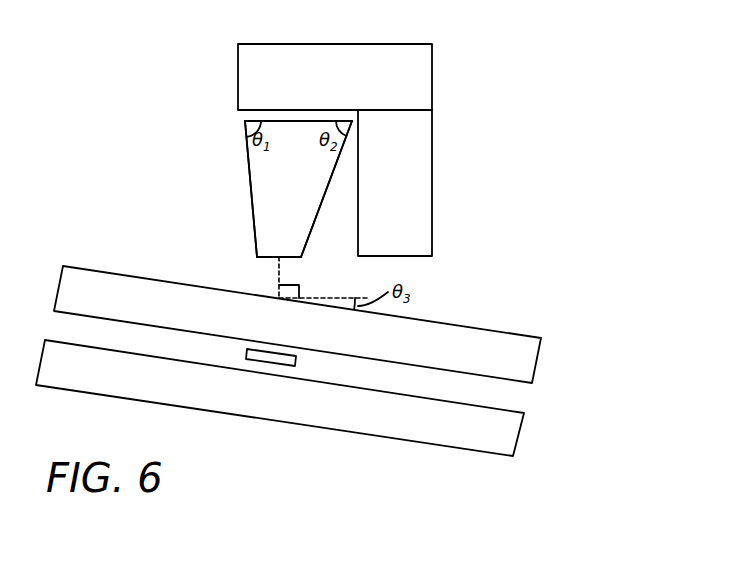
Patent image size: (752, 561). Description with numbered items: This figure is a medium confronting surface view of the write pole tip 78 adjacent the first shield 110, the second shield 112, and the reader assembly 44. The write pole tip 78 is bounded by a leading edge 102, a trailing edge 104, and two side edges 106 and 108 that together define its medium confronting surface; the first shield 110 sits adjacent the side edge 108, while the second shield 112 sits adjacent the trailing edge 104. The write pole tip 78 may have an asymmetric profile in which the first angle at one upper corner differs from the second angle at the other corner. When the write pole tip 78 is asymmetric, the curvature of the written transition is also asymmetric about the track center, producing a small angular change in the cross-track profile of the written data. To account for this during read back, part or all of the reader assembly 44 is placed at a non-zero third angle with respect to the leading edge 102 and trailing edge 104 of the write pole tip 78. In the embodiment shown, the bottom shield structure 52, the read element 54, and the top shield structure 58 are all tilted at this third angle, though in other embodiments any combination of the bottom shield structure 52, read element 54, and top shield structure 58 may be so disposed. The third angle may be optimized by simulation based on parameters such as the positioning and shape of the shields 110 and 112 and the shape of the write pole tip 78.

The reader assembly 44 is at (336, 376).
The bottom shield structure 52 is at (407, 441).
The read element 54 is at (296, 361).
The top shield structure 58 is at (463, 324).
The write pole tip 78 is at (298, 189).
The leading edge 102 is at (285, 258).
The trailing edge 104 is at (249, 120).
The side edge 106 is at (249, 180).
The side edge 108 is at (324, 198).
The first shield 110 is at (395, 183).
The second shield 112 is at (335, 77).